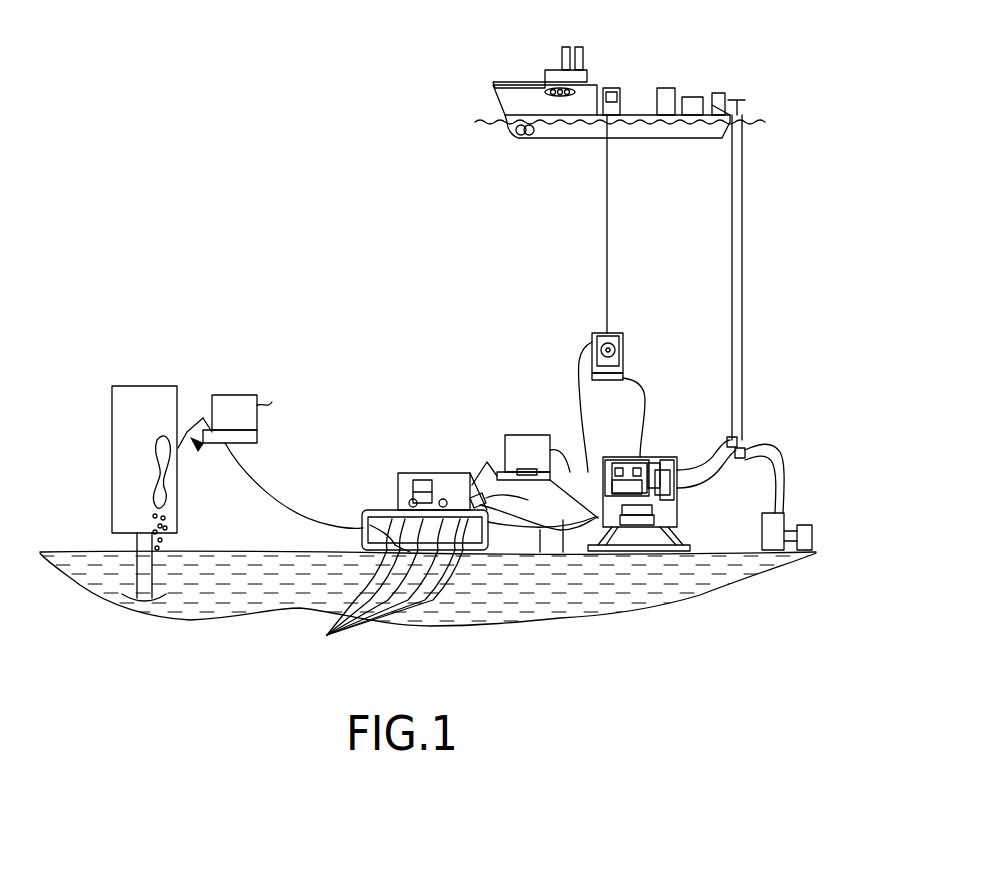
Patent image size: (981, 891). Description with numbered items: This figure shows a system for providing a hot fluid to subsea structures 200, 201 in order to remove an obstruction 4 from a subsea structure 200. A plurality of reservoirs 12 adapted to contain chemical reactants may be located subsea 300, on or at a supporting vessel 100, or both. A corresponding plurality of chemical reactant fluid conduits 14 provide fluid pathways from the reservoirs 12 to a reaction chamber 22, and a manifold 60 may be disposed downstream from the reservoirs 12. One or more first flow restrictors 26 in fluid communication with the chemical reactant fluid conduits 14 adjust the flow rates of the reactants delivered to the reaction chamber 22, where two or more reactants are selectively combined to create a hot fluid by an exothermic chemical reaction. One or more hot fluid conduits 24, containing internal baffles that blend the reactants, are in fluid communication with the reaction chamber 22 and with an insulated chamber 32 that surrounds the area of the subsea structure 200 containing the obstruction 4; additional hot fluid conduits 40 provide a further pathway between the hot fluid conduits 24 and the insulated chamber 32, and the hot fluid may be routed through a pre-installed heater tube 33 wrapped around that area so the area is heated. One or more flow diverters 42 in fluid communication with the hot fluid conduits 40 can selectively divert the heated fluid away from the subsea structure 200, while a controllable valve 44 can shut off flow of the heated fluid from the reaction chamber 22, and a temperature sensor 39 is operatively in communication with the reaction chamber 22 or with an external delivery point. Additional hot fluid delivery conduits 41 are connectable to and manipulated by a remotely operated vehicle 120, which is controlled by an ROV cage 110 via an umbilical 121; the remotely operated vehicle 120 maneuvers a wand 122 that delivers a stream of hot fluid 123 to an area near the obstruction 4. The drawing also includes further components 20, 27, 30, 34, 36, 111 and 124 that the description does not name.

The vessel 100 is at (513, 118).
The ROV cage 110 is at (612, 333).
The cable 111 is at (644, 390).
The umbilical 121 is at (577, 382).
The chemical reactant fluid conduits 14 is at (748, 440).
The pump assembly 20 is at (686, 506).
The reaction chamber 22 is at (612, 457).
The pump housing 27 is at (668, 457).
The first flow restrictor 26 is at (684, 488).
The hot fluid conduit 24 is at (625, 540).
The reservoirs 12 is at (762, 540).
The manifold 60 is at (805, 525).
The sled 30 is at (445, 464).
The insulated chamber 32 is at (390, 550).
The heater tube 33 is at (381, 589).
The sled runner 34 is at (375, 522).
The frame structure 36 is at (418, 499).
The temperature sensor 39 is at (185, 445).
The additional hot fluid conduits 40 is at (552, 555).
The additional hot fluid delivery conduits 41 is at (570, 472).
The flow diverter 42 is at (534, 508).
The controllable valve 44 is at (582, 535).
The remotely operated vehicle 120 is at (515, 435).
The wand 122 is at (203, 418).
The stream of hot fluid 123 is at (200, 447).
The sensor 124 is at (473, 480).
The subsea structure 200 is at (306, 552).
The subsea structure 201 is at (112, 410).
The subsea location 300 is at (90, 552).
The obstruction 4 is at (170, 490).